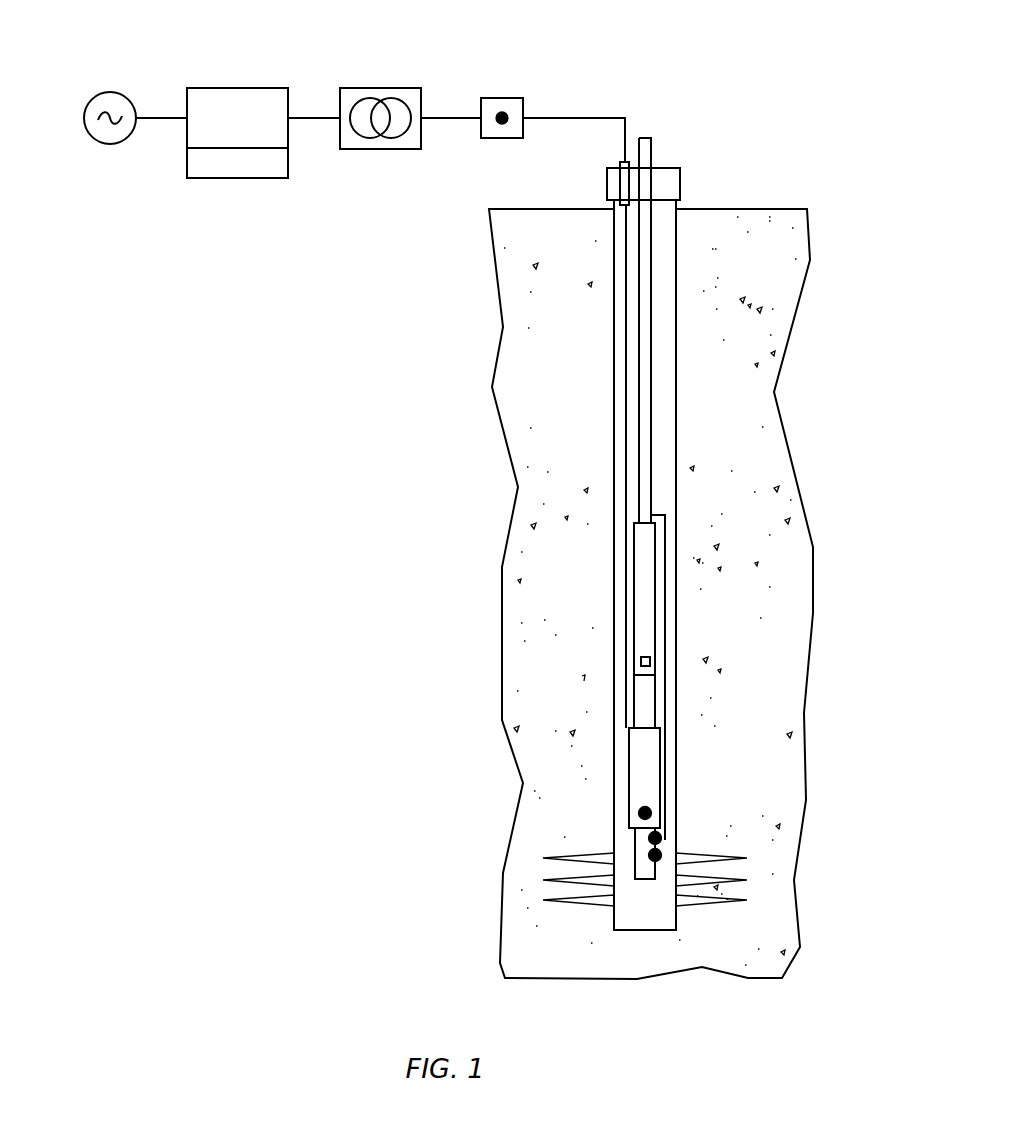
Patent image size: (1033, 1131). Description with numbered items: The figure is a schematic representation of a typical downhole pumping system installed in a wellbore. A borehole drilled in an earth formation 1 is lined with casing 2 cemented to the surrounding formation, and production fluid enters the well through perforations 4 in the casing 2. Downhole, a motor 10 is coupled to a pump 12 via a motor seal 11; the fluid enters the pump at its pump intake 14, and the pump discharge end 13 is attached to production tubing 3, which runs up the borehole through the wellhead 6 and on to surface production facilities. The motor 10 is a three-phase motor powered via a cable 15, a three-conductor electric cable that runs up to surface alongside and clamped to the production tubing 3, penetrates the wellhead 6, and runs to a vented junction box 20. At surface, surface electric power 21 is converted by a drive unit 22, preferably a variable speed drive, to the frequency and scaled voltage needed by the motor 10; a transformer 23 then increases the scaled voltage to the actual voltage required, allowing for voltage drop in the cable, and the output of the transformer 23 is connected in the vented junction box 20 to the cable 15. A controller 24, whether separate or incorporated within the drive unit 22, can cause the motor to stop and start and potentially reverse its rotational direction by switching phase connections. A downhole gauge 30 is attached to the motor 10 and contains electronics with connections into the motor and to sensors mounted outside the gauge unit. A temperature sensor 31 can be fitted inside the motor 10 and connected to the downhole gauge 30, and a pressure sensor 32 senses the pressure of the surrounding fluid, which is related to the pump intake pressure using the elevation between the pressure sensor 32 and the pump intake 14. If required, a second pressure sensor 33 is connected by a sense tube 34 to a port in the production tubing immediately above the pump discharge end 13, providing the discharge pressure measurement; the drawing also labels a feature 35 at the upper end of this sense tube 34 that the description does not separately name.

The earth formation 1 is at (540, 238).
The casing 2 is at (614, 308).
The production tubing 3 is at (639, 370).
The perforations 4 is at (598, 900).
The wellhead 6 is at (677, 182).
The motor 10 is at (629, 782).
The motor seal 11 is at (634, 705).
The pump 12 is at (634, 575).
The pump discharge end 13 is at (634, 522).
The pump intake 14 is at (641, 661).
The cable 15 is at (626, 422).
The vented junction box 20 is at (503, 98).
The surface electric power 21 is at (112, 92).
The drive unit 22 is at (238, 88).
The transformer 23 is at (381, 88).
The controller 24 is at (234, 168).
The downhole gauge 30 is at (635, 840).
The temperature sensor 31 is at (650, 813).
The pressure sensor 32 is at (658, 857).
The second pressure sensor 33 is at (660, 838).
The sense tube 34 is at (665, 600).
The conduit inlet 35 is at (651, 518).